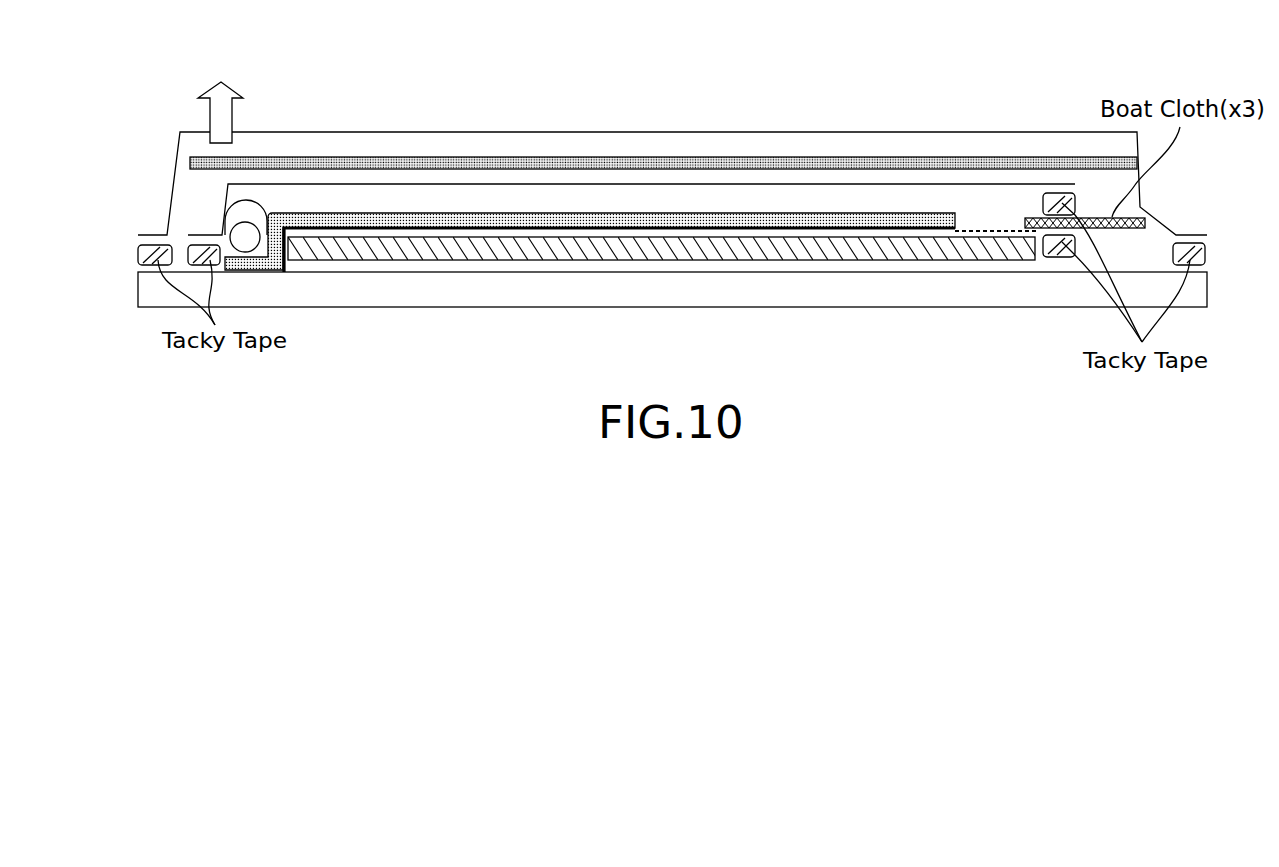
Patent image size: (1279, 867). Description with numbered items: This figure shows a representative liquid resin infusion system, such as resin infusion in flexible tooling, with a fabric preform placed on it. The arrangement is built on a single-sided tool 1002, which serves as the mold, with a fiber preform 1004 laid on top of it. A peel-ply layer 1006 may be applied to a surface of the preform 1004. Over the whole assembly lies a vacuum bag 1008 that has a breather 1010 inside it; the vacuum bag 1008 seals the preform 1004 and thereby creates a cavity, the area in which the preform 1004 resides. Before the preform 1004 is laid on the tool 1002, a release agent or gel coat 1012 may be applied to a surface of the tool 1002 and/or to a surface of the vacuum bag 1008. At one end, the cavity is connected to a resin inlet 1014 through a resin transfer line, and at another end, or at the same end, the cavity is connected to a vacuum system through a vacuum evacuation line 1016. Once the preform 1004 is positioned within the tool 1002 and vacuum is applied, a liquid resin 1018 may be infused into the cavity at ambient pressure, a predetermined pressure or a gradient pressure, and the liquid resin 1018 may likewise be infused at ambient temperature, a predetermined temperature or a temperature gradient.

The single-sided tool 1002 is at (1052, 293).
The fiber preform 1004 is at (463, 252).
The peel-ply layer 1006 is at (757, 230).
The vacuum bag 1008 is at (493, 132).
The breather 1010 is at (742, 157).
The release agent or gel coat 1012 is at (928, 183).
The resin inlet 1014 is at (250, 240).
The vacuum evacuation line 1016 is at (220, 95).
The liquid resin 1018 is at (838, 223).